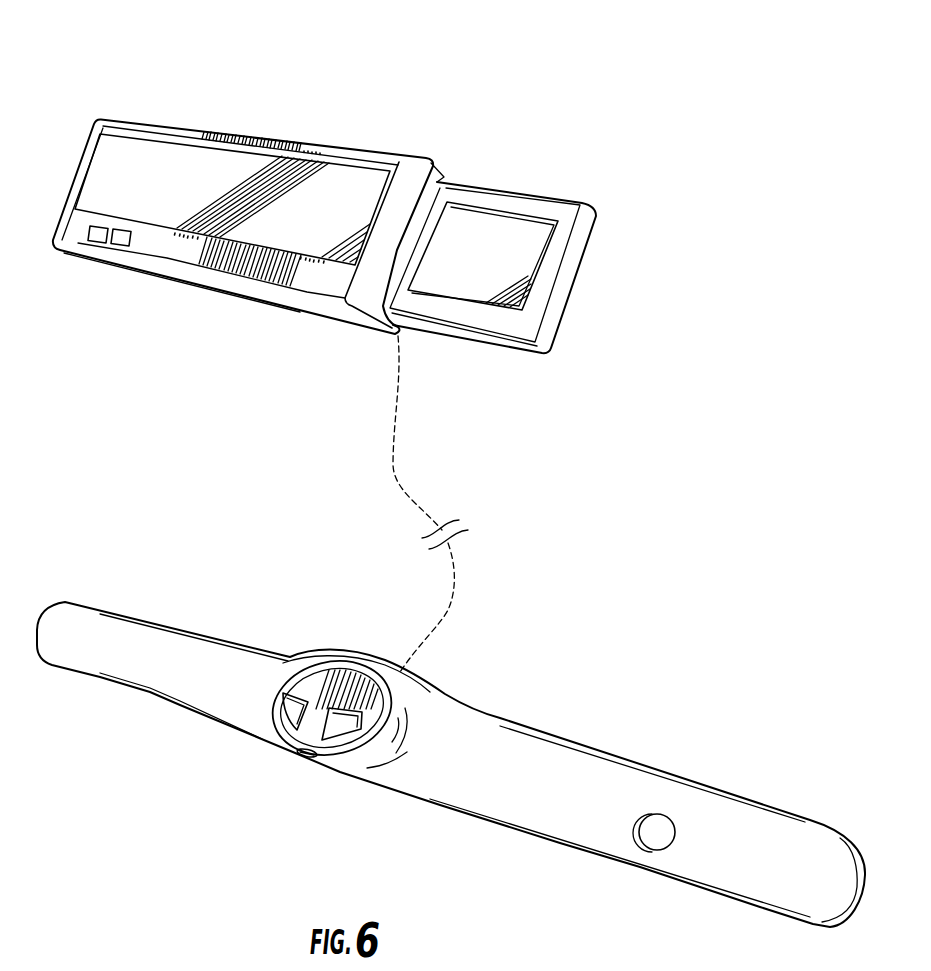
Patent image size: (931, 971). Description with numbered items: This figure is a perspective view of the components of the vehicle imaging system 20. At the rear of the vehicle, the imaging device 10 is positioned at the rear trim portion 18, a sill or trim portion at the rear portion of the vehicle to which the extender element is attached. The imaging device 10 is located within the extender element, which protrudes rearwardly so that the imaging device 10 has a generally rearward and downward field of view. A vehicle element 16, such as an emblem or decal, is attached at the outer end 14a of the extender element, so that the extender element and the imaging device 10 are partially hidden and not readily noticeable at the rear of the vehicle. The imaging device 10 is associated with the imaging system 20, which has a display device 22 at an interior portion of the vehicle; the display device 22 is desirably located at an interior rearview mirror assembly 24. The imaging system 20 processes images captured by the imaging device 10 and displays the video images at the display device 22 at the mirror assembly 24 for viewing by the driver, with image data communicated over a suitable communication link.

The imaging device 10 is at (307, 757).
The outer end of the extender element 14a is at (352, 727).
The vehicle element 16 is at (370, 698).
The trim portion 18 is at (163, 673).
The imaging system 20 is at (146, 92).
The display device 22 is at (462, 238).
The interior rearview mirror assembly 24 is at (268, 140).